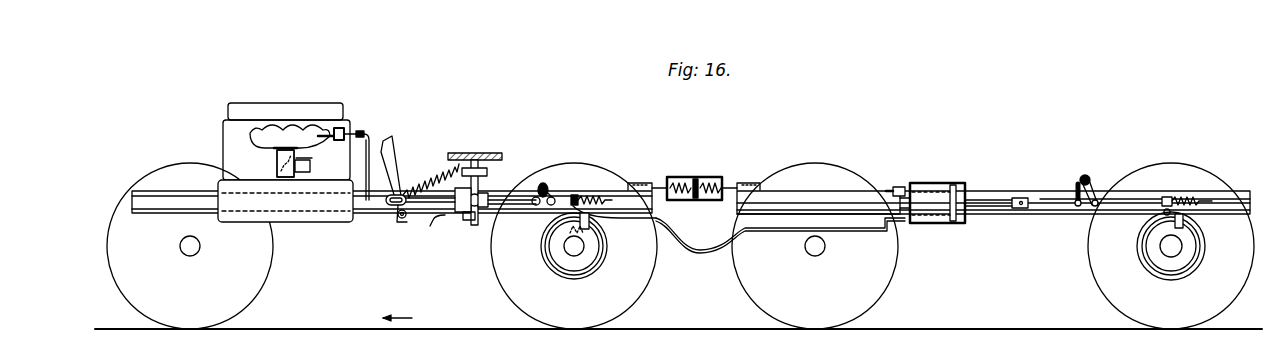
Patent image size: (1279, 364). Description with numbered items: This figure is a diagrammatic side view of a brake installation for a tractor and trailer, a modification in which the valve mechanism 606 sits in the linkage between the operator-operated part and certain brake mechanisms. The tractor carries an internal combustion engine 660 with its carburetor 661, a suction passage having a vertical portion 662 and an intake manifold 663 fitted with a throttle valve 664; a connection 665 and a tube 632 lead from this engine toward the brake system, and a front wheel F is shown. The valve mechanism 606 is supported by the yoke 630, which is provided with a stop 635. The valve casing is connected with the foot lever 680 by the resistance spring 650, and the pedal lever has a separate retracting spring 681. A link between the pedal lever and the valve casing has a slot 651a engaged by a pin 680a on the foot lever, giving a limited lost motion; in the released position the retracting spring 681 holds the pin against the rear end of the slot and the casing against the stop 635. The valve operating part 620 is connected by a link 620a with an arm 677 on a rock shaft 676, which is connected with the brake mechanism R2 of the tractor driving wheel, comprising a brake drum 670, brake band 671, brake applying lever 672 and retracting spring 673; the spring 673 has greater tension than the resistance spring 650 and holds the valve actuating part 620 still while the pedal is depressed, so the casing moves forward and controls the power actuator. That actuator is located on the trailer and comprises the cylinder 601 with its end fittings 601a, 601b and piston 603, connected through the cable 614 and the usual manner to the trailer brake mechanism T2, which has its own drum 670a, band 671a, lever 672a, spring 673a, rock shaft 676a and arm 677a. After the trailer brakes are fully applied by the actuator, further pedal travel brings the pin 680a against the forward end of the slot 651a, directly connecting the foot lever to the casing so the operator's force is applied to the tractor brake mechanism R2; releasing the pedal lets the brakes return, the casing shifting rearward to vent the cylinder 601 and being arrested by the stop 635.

The internal combustion engine 660 is at (242, 110).
The intake manifold 663 is at (278, 125).
The throttle connection 665 is at (338, 128).
The throttle tube 632 is at (367, 132).
The vertical portion of suction passage 662 is at (277, 155).
The throttle valve 664 is at (277, 172).
The carburetor 661 is at (310, 166).
The foot lever 680 is at (392, 160).
The retracting spring 681 is at (428, 183).
The stop 635 is at (490, 160).
The yoke 630 is at (476, 162).
The valve operating part 620 is at (503, 200).
The valve mechanism 606 is at (475, 222).
The resistance spring 650 is at (430, 205).
The slot 651a is at (395, 207).
The pin 680a is at (402, 210).
The link 620a is at (512, 204).
The arm 677 is at (545, 185).
The rock shaft 676 is at (554, 199).
The brake applying lever 672 is at (606, 180).
The retracting spring 673 is at (656, 218).
The brake cable 614 is at (700, 252).
The brake drum 670 is at (579, 277).
The brake band 671 is at (552, 268).
The cylinder 601 is at (942, 183).
The cylinder head 601a is at (908, 185).
The cylinder fitting 601b is at (895, 186).
The piston 603 is at (965, 190).
The trailer brake lever 677a is at (1078, 186).
The trailer brake link 676a is at (1086, 175).
The trailer brake spring block 672a is at (1167, 197).
The trailer brake spring 673a is at (1190, 200).
The trailer brake drum 670a is at (1171, 282).
The trailer brake band 671a is at (1140, 255).
The front wheel F is at (262, 290).
The brake mechanism R2 is at (605, 260).
The brake mechanism T2 is at (1200, 248).